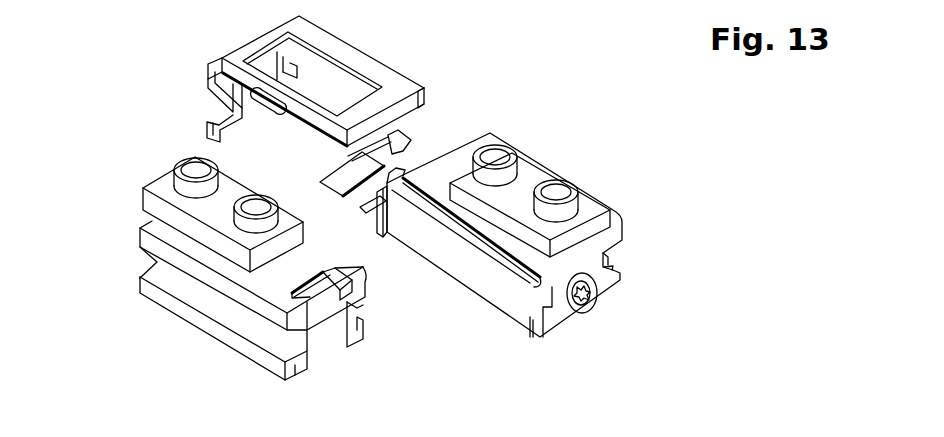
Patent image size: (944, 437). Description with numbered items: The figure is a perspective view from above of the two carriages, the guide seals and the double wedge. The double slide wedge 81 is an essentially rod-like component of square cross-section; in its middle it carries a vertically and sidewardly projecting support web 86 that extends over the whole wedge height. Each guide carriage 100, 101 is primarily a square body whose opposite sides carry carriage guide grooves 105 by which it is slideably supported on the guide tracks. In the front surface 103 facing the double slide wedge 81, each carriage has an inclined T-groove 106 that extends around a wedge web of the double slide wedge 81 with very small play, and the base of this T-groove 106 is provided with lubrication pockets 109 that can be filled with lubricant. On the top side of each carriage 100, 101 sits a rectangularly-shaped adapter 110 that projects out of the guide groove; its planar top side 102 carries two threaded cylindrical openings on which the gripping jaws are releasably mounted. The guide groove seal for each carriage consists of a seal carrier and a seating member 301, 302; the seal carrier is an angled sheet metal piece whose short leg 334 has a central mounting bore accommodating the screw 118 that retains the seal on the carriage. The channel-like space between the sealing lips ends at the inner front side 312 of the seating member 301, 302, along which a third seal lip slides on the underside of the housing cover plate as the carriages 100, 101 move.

The seating member 301 is at (370, 65).
The inner front side 312 is at (391, 147).
The double slide wedge 81 is at (383, 205).
The short leg 334 is at (208, 123).
The planar top side 102 is at (530, 175).
The adapter 110 is at (155, 207).
The carriage guide groove 105 is at (163, 275).
The guide carriage 100 is at (144, 300).
The lubrication pocket 109 is at (310, 278).
The inclined T-groove 106 is at (318, 290).
The front surface 103 is at (302, 367).
The support web 86 is at (390, 210).
The seating member 302 is at (614, 220).
The guide carriage 101 is at (609, 265).
The screw 118 is at (592, 291).